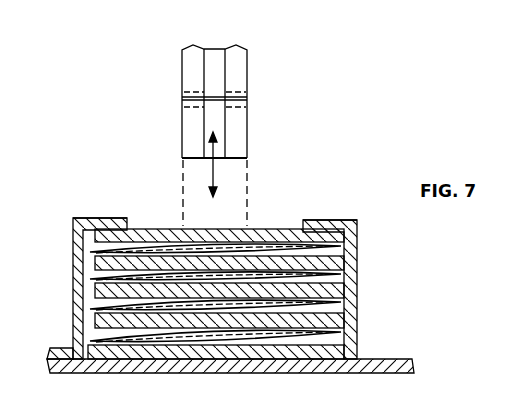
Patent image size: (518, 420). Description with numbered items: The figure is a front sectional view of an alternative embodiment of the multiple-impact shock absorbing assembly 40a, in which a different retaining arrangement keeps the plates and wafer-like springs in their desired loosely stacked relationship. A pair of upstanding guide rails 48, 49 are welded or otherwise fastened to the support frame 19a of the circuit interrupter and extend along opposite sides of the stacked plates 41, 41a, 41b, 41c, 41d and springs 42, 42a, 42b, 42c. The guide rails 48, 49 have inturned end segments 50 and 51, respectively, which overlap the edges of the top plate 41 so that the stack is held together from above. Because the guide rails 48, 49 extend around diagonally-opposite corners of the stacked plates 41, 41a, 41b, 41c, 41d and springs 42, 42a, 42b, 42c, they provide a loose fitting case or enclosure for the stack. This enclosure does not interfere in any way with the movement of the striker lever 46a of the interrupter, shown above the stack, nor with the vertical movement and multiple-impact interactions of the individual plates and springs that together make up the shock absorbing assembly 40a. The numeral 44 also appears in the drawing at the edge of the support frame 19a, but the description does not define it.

The shock absorbing assembly 40a is at (358, 145).
The striker lever 46a is at (189, 122).
The top plate 41 is at (153, 230).
The plate 41a is at (100, 262).
The plate 41b is at (341, 296).
The plate 41c is at (340, 326).
The plate 41d is at (320, 352).
The spring 42 is at (263, 249).
The spring 42a is at (335, 277).
The spring 42b is at (156, 308).
The spring 42c is at (112, 338).
The guide rail 48 is at (79, 316).
The guide rail 49 is at (358, 231).
The inturned end segment 50 is at (333, 220).
The inturned end segment 51 is at (108, 218).
The support frame 19a is at (241, 362).
The base 44 is at (505, 402).